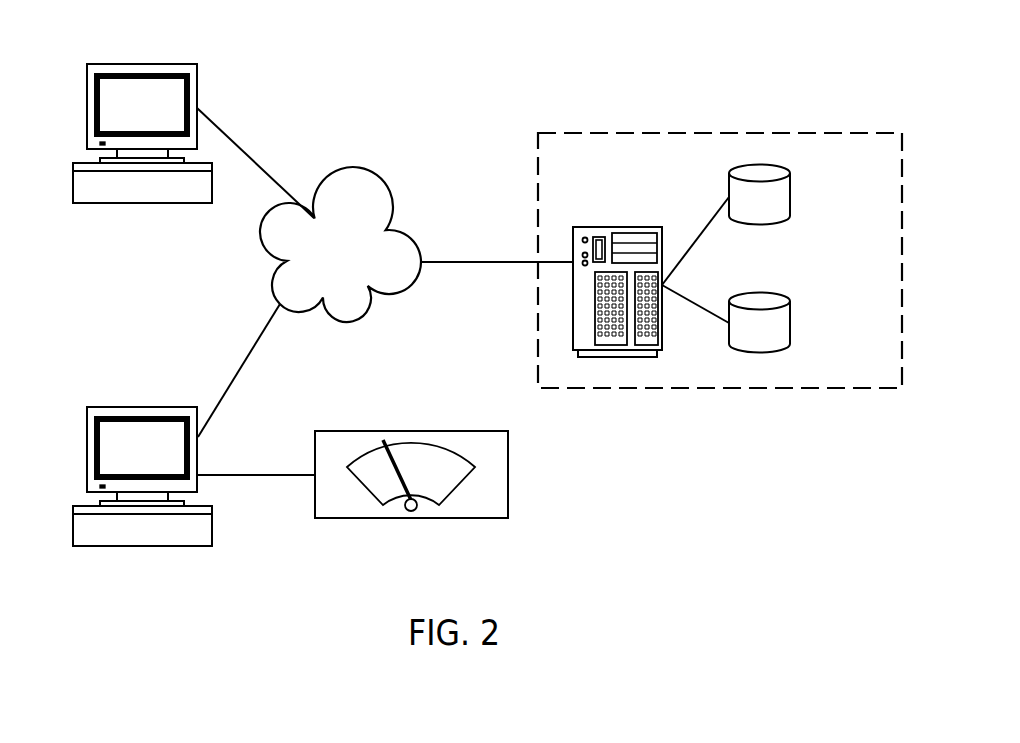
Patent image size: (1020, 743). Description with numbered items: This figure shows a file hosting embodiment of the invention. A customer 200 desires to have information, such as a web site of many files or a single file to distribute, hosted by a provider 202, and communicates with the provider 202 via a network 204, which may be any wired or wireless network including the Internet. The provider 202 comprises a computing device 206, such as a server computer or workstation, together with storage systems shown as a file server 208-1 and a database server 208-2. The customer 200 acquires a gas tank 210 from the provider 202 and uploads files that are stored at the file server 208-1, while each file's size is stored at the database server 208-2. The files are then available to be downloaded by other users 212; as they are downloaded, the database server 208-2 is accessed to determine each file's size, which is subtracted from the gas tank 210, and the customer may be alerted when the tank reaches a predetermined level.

The customer 200 is at (117, 407).
The provider 202 is at (589, 170).
The network 204 is at (360, 263).
The computing device 206 is at (643, 227).
The file server 208-1 is at (790, 195).
The database server 208-2 is at (790, 323).
The gas tank 210 is at (470, 431).
The other users 212 is at (117, 64).